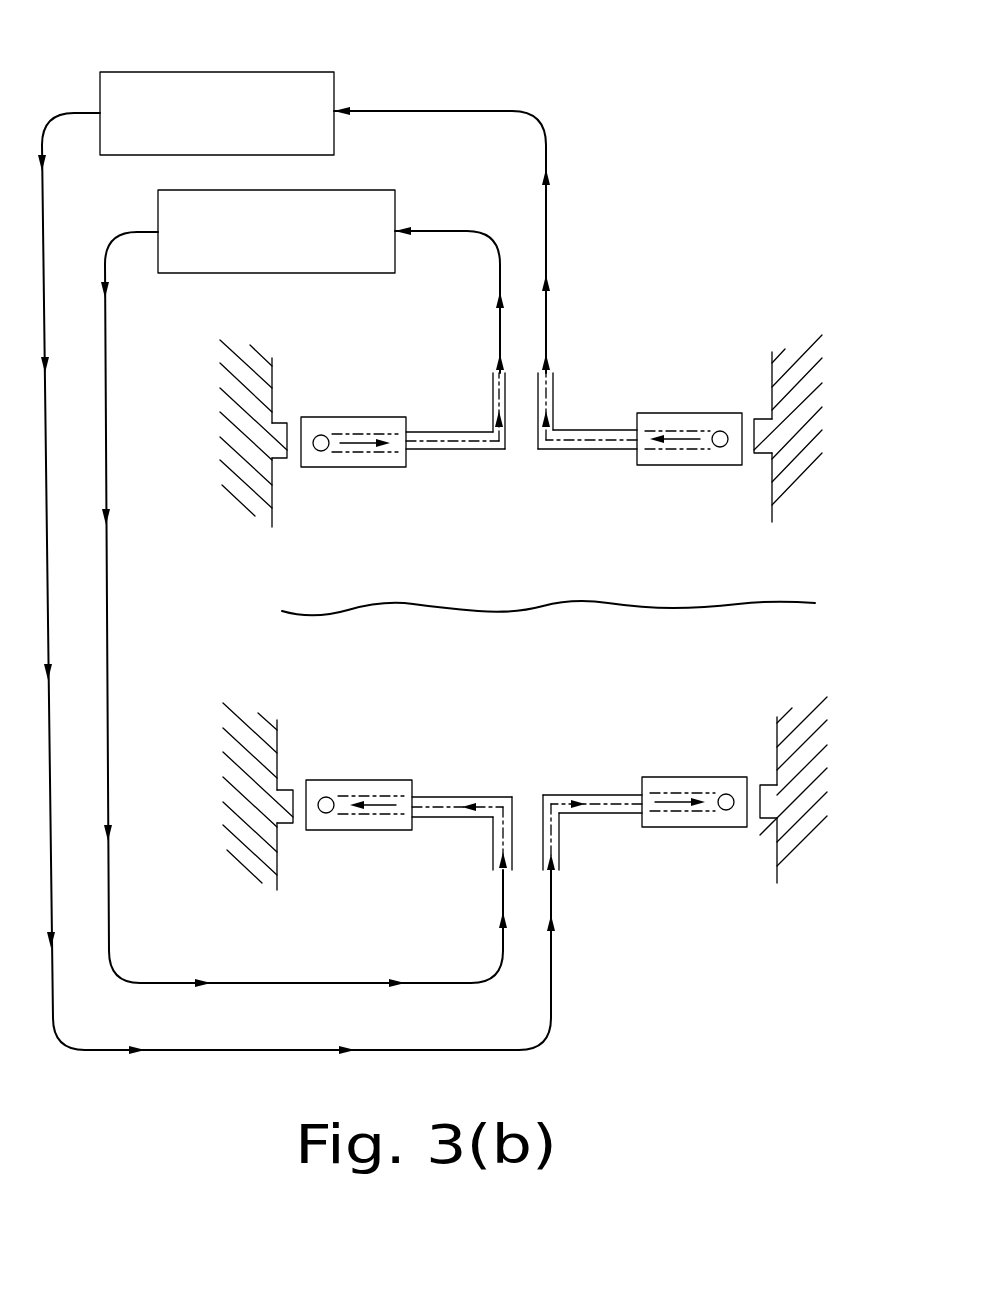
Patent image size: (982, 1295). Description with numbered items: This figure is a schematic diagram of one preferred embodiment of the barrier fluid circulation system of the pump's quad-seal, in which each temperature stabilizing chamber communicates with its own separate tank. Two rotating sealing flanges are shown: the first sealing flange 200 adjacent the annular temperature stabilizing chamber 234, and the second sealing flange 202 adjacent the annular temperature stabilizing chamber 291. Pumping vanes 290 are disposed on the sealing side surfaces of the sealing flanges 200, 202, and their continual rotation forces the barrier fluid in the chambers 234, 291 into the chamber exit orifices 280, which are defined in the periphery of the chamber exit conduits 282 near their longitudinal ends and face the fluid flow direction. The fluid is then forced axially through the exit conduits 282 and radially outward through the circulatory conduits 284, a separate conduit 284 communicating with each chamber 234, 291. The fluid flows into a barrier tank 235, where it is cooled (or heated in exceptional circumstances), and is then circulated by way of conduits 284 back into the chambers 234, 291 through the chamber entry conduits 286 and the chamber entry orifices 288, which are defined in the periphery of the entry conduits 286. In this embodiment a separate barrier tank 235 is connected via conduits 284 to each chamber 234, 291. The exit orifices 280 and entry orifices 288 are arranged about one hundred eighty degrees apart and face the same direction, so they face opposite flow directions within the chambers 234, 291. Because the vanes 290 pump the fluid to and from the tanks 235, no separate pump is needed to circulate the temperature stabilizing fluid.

The barrier tank 235 is at (271, 78).
The second rotating sealing flange 202 is at (232, 362).
The first rotating sealing flange 200 is at (791, 512).
The pumping vanes 290 is at (276, 423).
The chamber exit orifices 280 is at (320, 452).
The chamber entry orifices 288 is at (327, 797).
The chamber exit conduits 282 is at (418, 446).
The chamber entry conduits 286 is at (440, 797).
The circulatory conduits 284 is at (492, 392).
The annular temperature stabilizing chamber 291 is at (320, 549).
The annular temperature stabilizing chamber 234 is at (736, 540).